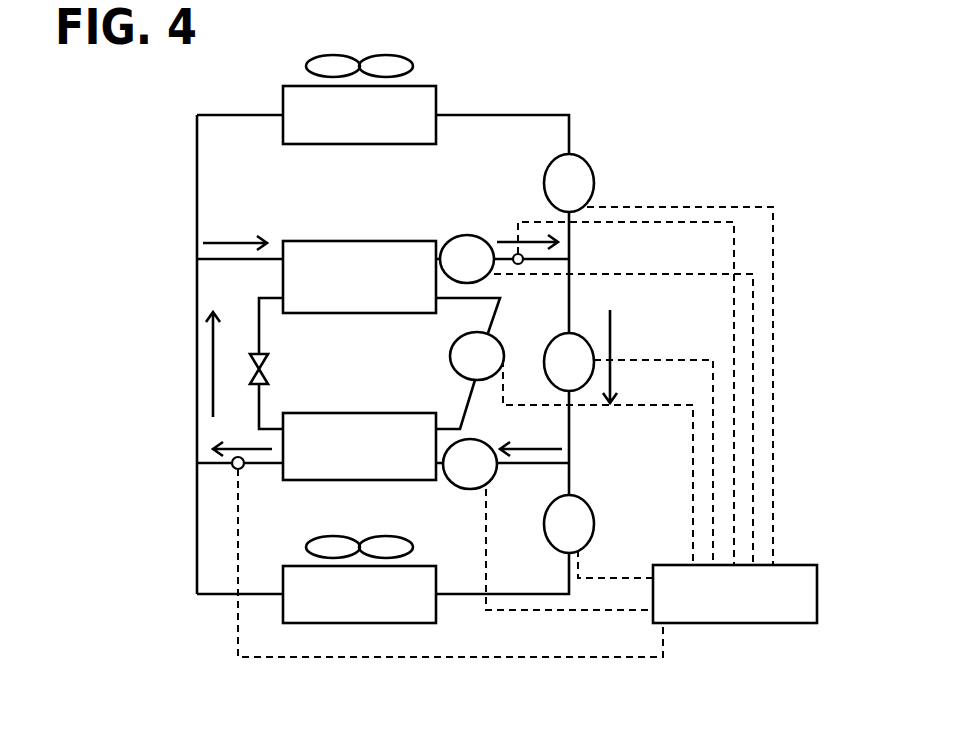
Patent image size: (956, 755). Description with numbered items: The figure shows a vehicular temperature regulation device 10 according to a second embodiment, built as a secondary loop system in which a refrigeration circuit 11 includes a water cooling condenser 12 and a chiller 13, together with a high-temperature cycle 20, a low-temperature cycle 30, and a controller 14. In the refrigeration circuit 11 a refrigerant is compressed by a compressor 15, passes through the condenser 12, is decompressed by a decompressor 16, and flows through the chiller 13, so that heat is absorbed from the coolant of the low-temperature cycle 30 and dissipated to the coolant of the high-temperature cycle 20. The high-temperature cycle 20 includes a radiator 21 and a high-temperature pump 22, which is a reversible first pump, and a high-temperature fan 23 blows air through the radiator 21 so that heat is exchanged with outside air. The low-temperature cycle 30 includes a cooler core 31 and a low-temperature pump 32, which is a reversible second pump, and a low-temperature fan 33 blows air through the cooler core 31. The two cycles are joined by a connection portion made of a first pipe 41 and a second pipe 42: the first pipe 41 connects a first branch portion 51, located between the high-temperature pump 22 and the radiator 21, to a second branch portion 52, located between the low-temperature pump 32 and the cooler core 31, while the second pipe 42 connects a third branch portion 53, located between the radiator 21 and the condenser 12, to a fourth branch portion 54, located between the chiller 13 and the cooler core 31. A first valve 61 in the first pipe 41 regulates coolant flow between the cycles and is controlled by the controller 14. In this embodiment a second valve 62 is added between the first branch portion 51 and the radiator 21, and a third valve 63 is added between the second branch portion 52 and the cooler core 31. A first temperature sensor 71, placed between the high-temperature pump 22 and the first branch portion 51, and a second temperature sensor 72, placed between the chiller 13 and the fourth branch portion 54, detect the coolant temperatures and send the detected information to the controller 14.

The vehicular temperature regulation device 10 is at (693, 90).
The refrigeration circuit 11 is at (494, 420).
The condenser 12 is at (406, 241).
The chiller 13 is at (406, 413).
The controller 14 is at (793, 565).
The compressor 15 is at (497, 337).
The decompressor 16 is at (268, 372).
The high-temperature cycle 20 is at (590, 127).
The radiator 21 is at (436, 130).
The high-temperature pump 22 is at (474, 235).
The high-temperature fan 23 is at (413, 66).
The low-temperature cycle 30 is at (601, 565).
The cooler core 31 is at (436, 612).
The low-temperature pump 32 is at (490, 480).
The low-temperature fan 33 is at (413, 547).
The first pipe 41 is at (571, 279).
The second pipe 42 is at (197, 340).
The first branch portion 51 is at (575, 257).
The second branch portion 52 is at (572, 462).
The third branch portion 53 is at (197, 258).
The fourth branch portion 54 is at (197, 461).
The first valve 61 is at (586, 333).
The second valve 62 is at (594, 181).
The third valve 63 is at (595, 512).
The first temperature sensor 71 is at (520, 266).
The second temperature sensor 72 is at (236, 470).